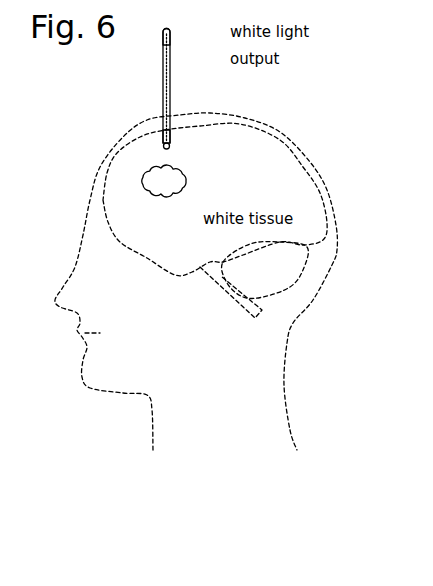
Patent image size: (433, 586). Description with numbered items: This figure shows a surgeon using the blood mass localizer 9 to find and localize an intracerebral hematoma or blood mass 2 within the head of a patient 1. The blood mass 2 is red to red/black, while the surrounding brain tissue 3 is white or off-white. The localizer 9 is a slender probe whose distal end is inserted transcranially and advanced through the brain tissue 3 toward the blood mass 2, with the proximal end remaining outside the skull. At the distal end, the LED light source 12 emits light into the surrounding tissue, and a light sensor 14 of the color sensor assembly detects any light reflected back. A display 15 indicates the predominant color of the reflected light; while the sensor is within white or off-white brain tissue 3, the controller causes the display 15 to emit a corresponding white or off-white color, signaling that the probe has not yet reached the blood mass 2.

The patient 1 is at (91, 229).
The blood mass 2 is at (150, 178).
The brain tissue 3 is at (236, 190).
The blood mass localizer 9 is at (171, 70).
The light source 12 is at (162, 144).
The light sensor 14 is at (169, 144).
The display 15 is at (168, 31).